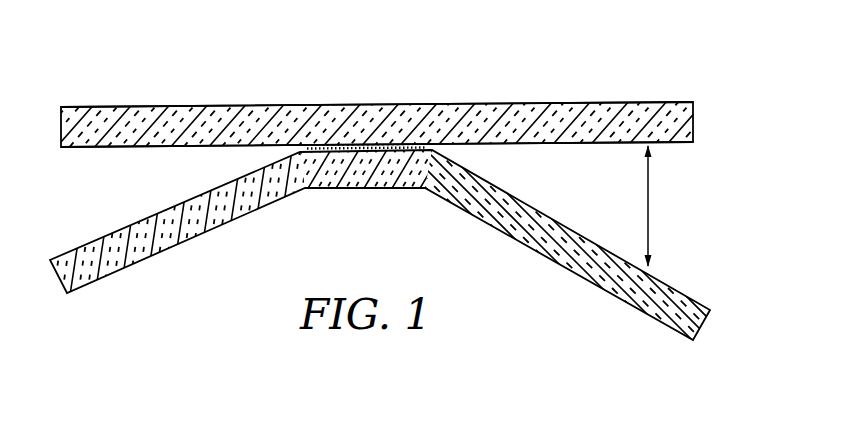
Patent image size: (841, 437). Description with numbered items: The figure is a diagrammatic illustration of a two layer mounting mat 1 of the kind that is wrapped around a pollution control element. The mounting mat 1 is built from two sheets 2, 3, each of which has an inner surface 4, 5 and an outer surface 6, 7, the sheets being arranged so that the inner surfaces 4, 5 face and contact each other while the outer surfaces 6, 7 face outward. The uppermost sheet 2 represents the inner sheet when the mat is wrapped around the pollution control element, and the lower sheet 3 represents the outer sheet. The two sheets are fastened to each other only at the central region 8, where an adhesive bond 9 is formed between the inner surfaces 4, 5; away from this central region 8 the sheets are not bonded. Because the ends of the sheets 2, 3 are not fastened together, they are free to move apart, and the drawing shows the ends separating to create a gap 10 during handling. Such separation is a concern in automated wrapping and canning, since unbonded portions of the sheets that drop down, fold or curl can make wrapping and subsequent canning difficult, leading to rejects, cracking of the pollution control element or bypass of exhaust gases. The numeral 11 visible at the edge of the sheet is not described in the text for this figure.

The mounting mat 1 is at (121, 55).
The sheet 2 is at (418, 118).
The sheet 3 is at (390, 178).
The inner surface 4 is at (128, 148).
The inner surface 5 is at (102, 238).
The outer surface 6 is at (598, 103).
The outer surface 7 is at (630, 306).
The central region 8 is at (341, 189).
The adhesive bond 9 is at (337, 147).
The gap 10 is at (651, 204).
The element of adjacent figure (partially shown) 11 is at (600, 431).